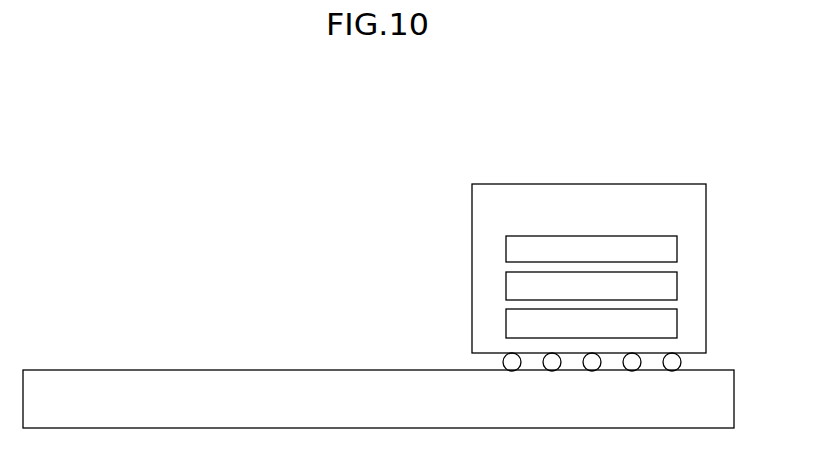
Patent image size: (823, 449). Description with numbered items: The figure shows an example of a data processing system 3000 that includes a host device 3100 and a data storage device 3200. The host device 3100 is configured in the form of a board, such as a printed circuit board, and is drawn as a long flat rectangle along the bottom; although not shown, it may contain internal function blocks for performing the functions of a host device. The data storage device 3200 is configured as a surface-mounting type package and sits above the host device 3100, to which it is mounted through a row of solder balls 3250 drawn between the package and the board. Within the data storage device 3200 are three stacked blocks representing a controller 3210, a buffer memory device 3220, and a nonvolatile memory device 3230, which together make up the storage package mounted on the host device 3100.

The data processing system 3000 is at (84, 124).
The host device 3100 is at (378, 399).
The data storage device 3200 is at (589, 268).
The controller 3210 is at (591, 249).
The buffer memory device 3220 is at (591, 286).
The nonvolatile memory device 3230 is at (591, 324).
The solder balls 3250 is at (690, 361).